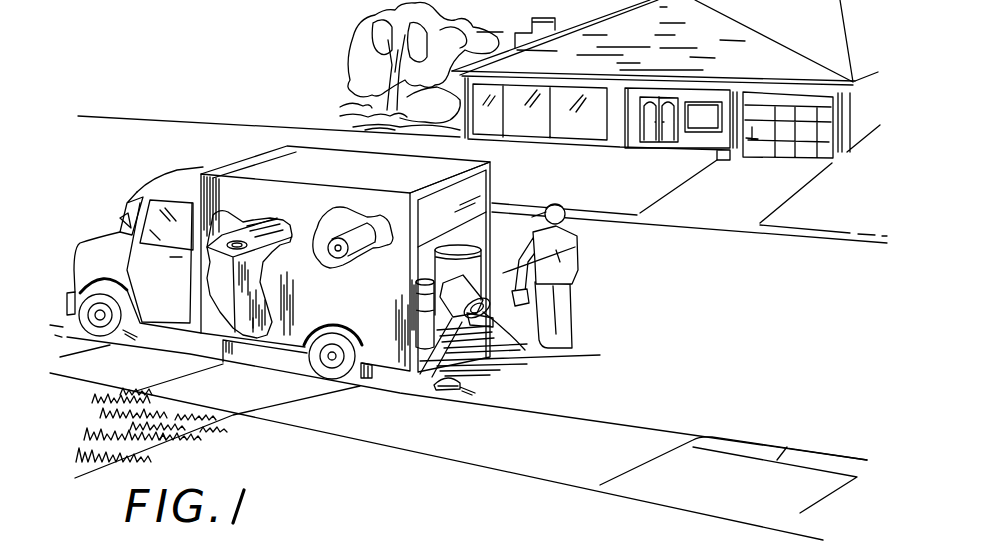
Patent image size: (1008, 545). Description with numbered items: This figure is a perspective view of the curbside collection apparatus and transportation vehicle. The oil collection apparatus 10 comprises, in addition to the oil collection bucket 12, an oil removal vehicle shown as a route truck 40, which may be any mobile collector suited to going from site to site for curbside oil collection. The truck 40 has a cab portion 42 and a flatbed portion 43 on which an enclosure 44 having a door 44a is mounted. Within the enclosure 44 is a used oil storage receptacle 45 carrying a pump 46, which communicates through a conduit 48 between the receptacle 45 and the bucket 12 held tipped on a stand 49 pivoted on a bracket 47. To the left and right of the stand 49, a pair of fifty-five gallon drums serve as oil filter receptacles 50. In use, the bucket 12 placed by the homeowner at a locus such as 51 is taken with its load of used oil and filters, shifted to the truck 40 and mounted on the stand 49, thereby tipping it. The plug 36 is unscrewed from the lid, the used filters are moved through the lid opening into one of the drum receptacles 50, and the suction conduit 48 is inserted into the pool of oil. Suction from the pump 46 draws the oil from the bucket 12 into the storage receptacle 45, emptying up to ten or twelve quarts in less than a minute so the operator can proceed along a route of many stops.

The oil collection apparatus 10 is at (578, 249).
The oil collection bucket 12 is at (503, 272).
The plug 36 is at (445, 391).
The route truck 40 is at (327, 251).
The cab portion 42 is at (106, 260).
The flatbed portion 43 is at (228, 337).
The enclosure 44 is at (406, 259).
The door 44a is at (487, 180).
The used oil storage receptacle 45 is at (280, 226).
The pump 46 is at (363, 258).
The bracket 47 is at (525, 350).
The conduit 48 is at (343, 210).
The stand 49 is at (455, 316).
The oil filter receptacles 50 is at (470, 245).
The locus 51 is at (187, 426).